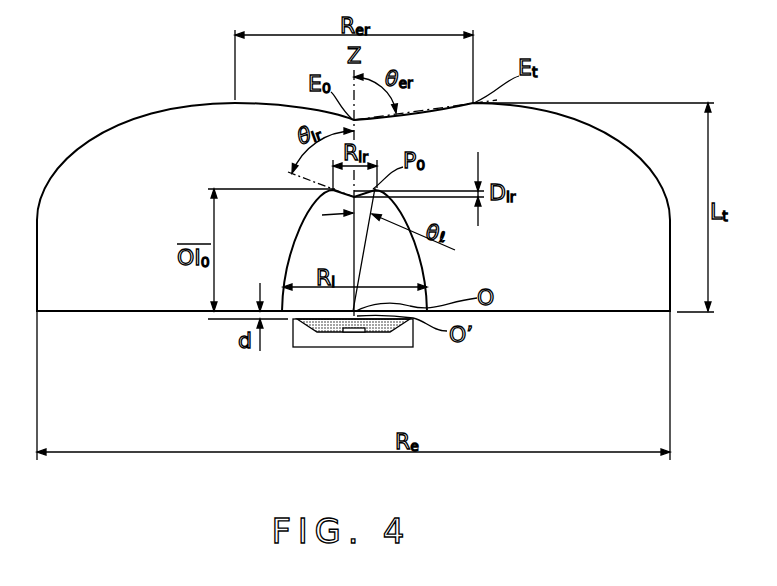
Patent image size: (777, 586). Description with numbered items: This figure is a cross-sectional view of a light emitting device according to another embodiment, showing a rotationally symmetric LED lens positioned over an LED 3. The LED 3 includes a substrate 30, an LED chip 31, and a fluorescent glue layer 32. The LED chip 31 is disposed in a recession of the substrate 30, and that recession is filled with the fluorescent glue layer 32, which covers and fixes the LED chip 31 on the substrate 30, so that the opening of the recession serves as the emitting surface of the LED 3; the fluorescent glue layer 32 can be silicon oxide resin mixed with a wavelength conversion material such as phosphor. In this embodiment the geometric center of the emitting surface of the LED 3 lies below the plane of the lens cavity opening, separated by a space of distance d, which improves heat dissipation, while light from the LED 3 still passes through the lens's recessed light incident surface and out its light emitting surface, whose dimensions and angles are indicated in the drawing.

The LED 3 is at (350, 379).
The substrate 30 is at (312, 338).
The LED chip 31 is at (352, 366).
The fluorescent glue layer 32 is at (387, 333).